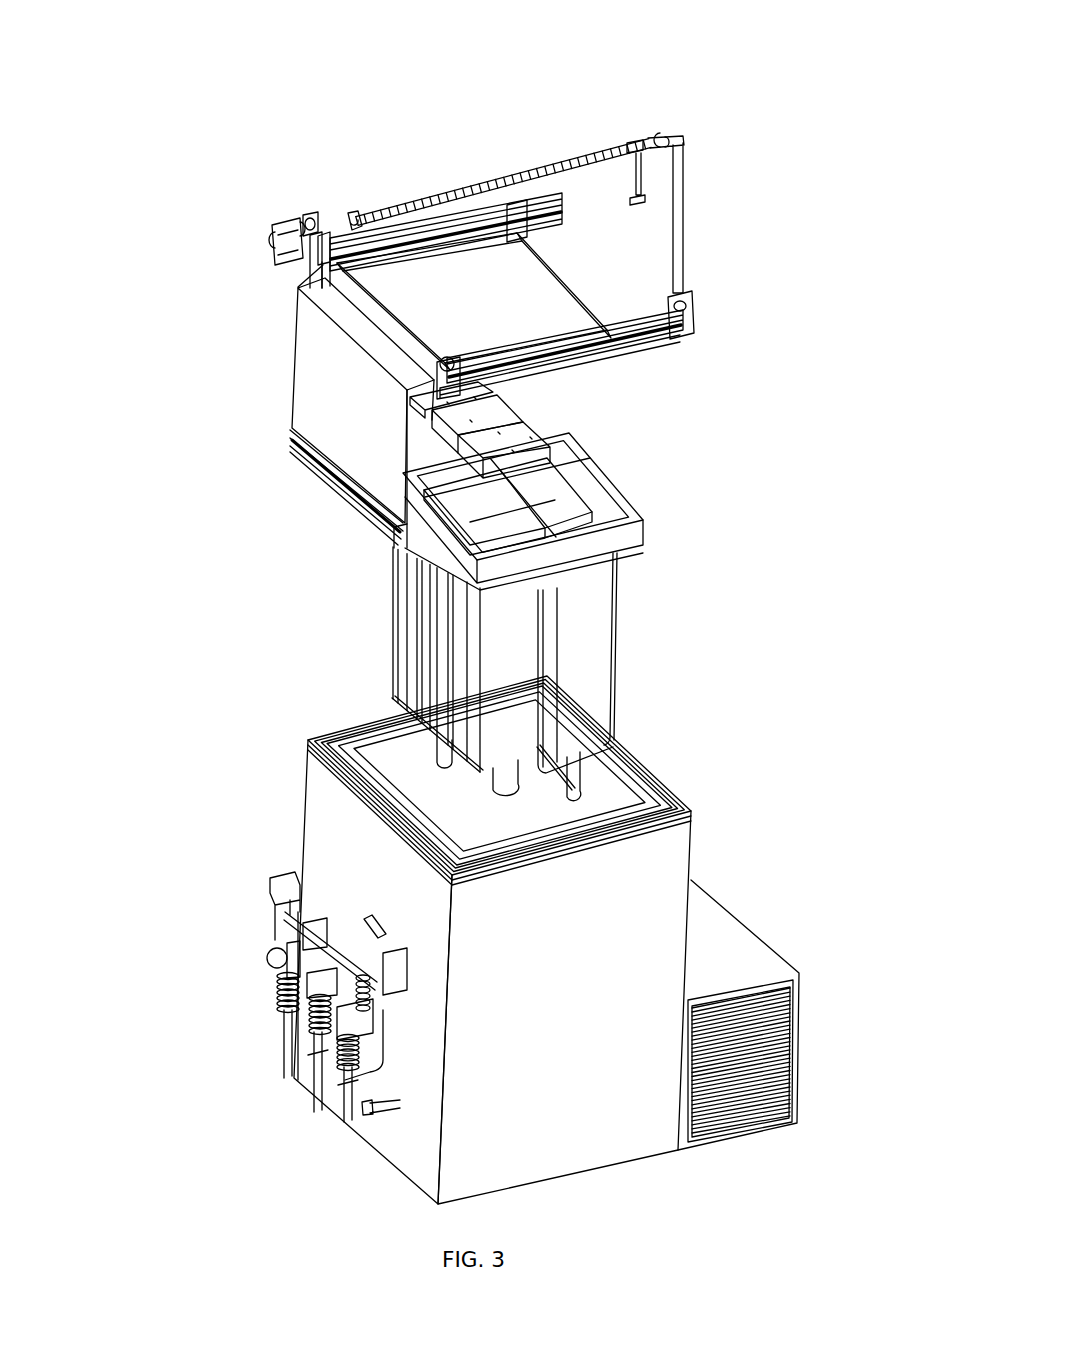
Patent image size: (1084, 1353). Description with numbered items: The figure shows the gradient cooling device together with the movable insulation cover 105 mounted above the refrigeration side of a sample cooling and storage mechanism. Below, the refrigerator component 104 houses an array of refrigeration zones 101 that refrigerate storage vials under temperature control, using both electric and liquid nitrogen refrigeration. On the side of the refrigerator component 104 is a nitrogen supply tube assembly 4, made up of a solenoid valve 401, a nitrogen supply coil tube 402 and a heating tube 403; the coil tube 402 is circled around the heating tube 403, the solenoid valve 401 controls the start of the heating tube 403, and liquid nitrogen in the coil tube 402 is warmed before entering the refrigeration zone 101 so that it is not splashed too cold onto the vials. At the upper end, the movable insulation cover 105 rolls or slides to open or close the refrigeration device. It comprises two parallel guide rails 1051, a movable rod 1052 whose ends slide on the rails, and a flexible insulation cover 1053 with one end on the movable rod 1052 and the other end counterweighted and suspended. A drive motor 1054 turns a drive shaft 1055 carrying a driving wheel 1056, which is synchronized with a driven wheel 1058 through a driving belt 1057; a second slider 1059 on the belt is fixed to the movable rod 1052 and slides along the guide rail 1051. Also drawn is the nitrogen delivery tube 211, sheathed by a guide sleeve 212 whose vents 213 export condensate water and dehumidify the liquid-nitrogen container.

The nitrogen supply tube assembly 4 is at (278, 923).
The solenoid valve 401 is at (292, 917).
The nitrogen supply coil tube 402 is at (278, 993).
The heating tube 403 is at (278, 1030).
The refrigeration zone 101 is at (580, 642).
The refrigerator component 104 is at (590, 960).
The movable insulation cover 105 is at (310, 335).
The guide rail 1051 is at (547, 363).
The movable rod 1052 is at (603, 293).
The flexible insulation cover 1053 is at (510, 273).
The drive motor 1054 is at (275, 248).
The drive shaft 1055 is at (328, 260).
The driving wheel 1056 is at (283, 220).
The driving belt 1057 is at (683, 322).
The driven wheel 1058 is at (550, 438).
The second slider 1059 is at (473, 183).
The nitrogen delivery tube 211 is at (682, 163).
The guide sleeve 212 is at (552, 160).
The vent 213 is at (523, 167).